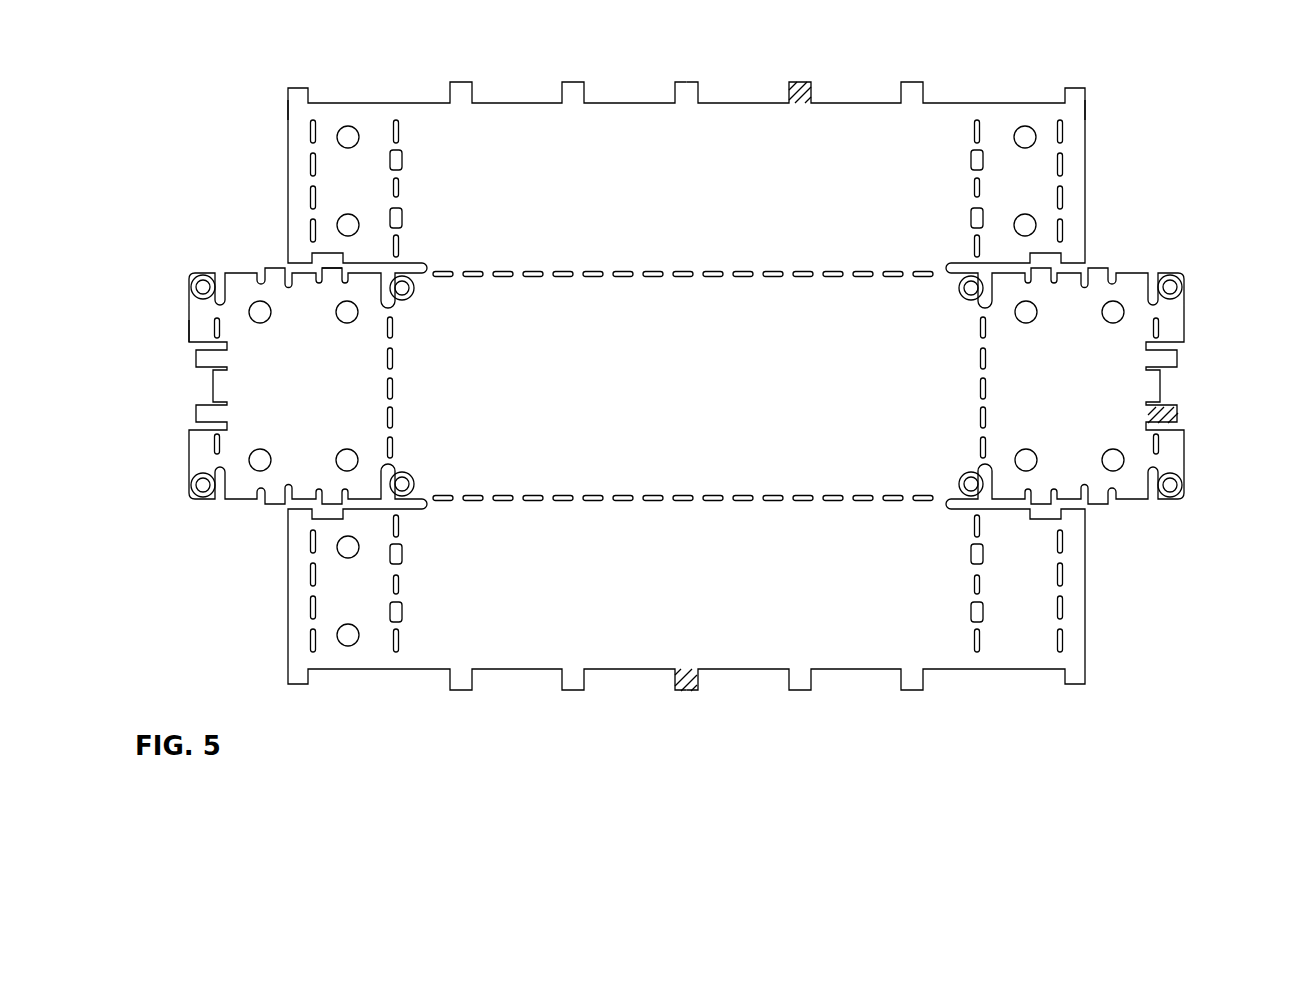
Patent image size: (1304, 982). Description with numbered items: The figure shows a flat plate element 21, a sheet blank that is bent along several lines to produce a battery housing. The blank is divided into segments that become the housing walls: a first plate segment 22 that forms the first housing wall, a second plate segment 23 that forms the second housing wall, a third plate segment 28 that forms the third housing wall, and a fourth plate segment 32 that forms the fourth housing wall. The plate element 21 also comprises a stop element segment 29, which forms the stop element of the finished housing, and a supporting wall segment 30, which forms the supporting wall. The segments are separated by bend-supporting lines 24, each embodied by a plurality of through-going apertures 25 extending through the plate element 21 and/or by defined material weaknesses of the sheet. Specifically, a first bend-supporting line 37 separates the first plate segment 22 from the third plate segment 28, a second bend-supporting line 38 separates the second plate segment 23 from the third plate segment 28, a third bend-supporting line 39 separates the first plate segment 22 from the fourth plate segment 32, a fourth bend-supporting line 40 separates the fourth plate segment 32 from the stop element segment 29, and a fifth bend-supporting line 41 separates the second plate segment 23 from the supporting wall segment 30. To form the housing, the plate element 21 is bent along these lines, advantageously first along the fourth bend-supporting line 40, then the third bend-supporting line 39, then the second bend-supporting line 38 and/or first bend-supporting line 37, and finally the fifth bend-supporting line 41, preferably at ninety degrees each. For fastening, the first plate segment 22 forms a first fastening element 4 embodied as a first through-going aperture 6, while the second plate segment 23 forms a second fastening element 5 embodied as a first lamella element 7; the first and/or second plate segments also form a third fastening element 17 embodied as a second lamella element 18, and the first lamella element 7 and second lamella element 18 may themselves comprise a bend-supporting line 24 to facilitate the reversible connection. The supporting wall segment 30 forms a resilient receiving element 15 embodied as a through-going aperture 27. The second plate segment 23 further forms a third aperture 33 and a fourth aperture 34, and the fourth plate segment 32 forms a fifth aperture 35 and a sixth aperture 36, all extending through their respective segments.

The first fastening element 4 is at (422, 675).
The second fastening element 5 is at (273, 425).
The first through-going aperture 6 is at (400, 621).
The first lamella element 7 is at (290, 509).
The resilient receiving element 15 is at (161, 287).
The third fastening element 17 is at (968, 392).
The second lamella element 18 is at (802, 97).
The plate element 21 is at (694, 392).
The first plate segment 22 is at (722, 190).
The second plate segment 23 is at (300, 388).
The bend-supporting line 24 is at (744, 392).
The through-going apertures 25 is at (683, 268).
The through-going aperture 27 is at (196, 287).
The third plate segment 28 is at (785, 392).
The stop element segment 29 is at (300, 632).
The supporting wall segment 30 is at (202, 329).
The fourth plate segment 32 is at (345, 597).
The third aperture 33 is at (340, 306).
The fourth aperture 34 is at (256, 304).
The fifth aperture 35 is at (343, 222).
The sixth aperture 36 is at (347, 139).
The first bend-supporting line 37 is at (533, 270).
The second bend-supporting line 38 is at (985, 388).
The third bend-supporting line 39 is at (700, 392).
The fourth bend-supporting line 40 is at (1065, 130).
The fifth bend-supporting line 41 is at (1162, 327).